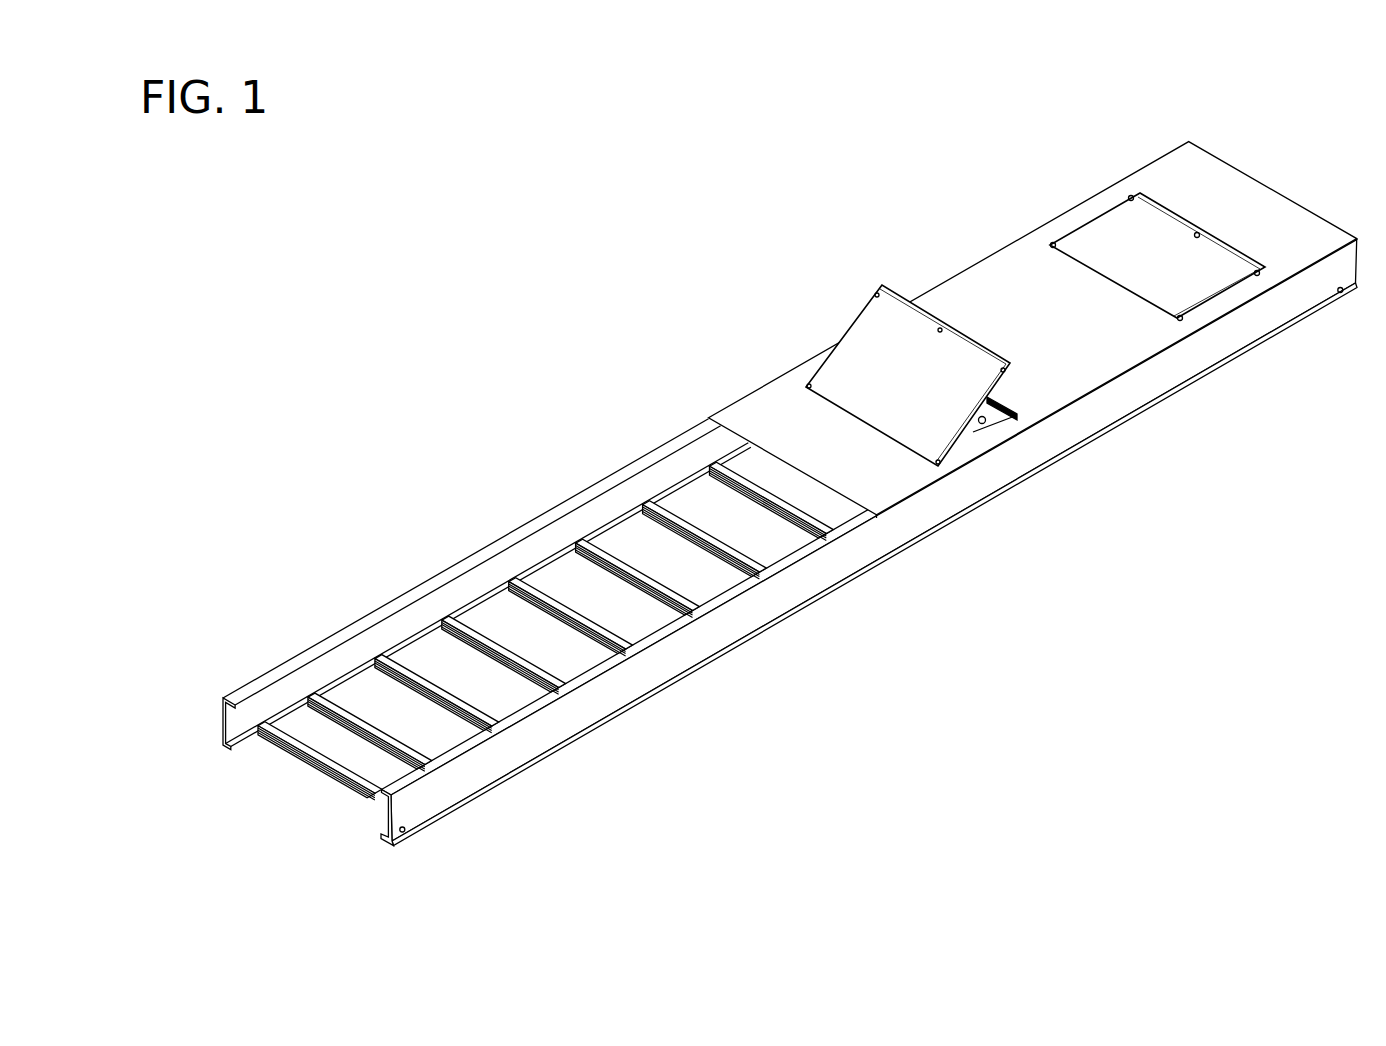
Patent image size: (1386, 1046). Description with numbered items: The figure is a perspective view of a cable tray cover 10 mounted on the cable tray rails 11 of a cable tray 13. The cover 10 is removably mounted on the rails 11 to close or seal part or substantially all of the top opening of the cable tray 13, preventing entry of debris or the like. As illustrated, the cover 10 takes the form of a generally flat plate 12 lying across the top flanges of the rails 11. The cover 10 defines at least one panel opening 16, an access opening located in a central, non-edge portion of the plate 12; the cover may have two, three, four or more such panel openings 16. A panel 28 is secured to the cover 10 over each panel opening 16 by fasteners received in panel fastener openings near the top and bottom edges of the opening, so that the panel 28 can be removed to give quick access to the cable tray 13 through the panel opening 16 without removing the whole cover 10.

The cable tray cover 10 is at (985, 292).
The cable tray rails 11 is at (664, 633).
The flat plate 12 is at (1118, 348).
The cable tray 13 is at (484, 620).
The panel opening 16 is at (990, 427).
The panel 28 is at (860, 345).